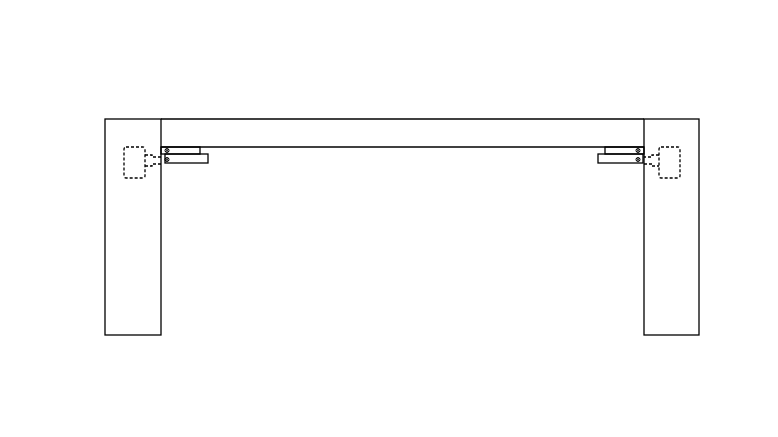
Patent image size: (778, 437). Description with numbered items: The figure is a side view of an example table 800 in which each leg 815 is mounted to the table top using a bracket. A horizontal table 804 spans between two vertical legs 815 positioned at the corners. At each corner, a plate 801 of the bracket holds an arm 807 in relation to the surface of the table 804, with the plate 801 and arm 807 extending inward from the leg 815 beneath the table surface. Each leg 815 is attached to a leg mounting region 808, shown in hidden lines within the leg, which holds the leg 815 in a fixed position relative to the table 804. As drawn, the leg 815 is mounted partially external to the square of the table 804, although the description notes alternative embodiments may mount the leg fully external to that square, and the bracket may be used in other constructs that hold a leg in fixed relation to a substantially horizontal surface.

The table 800 is at (89, 60).
The plate 801 is at (188, 150).
The table 804 is at (401, 143).
The arm 807 is at (190, 158).
The leg mounting region 808 is at (123, 161).
The leg 815 is at (150, 236).